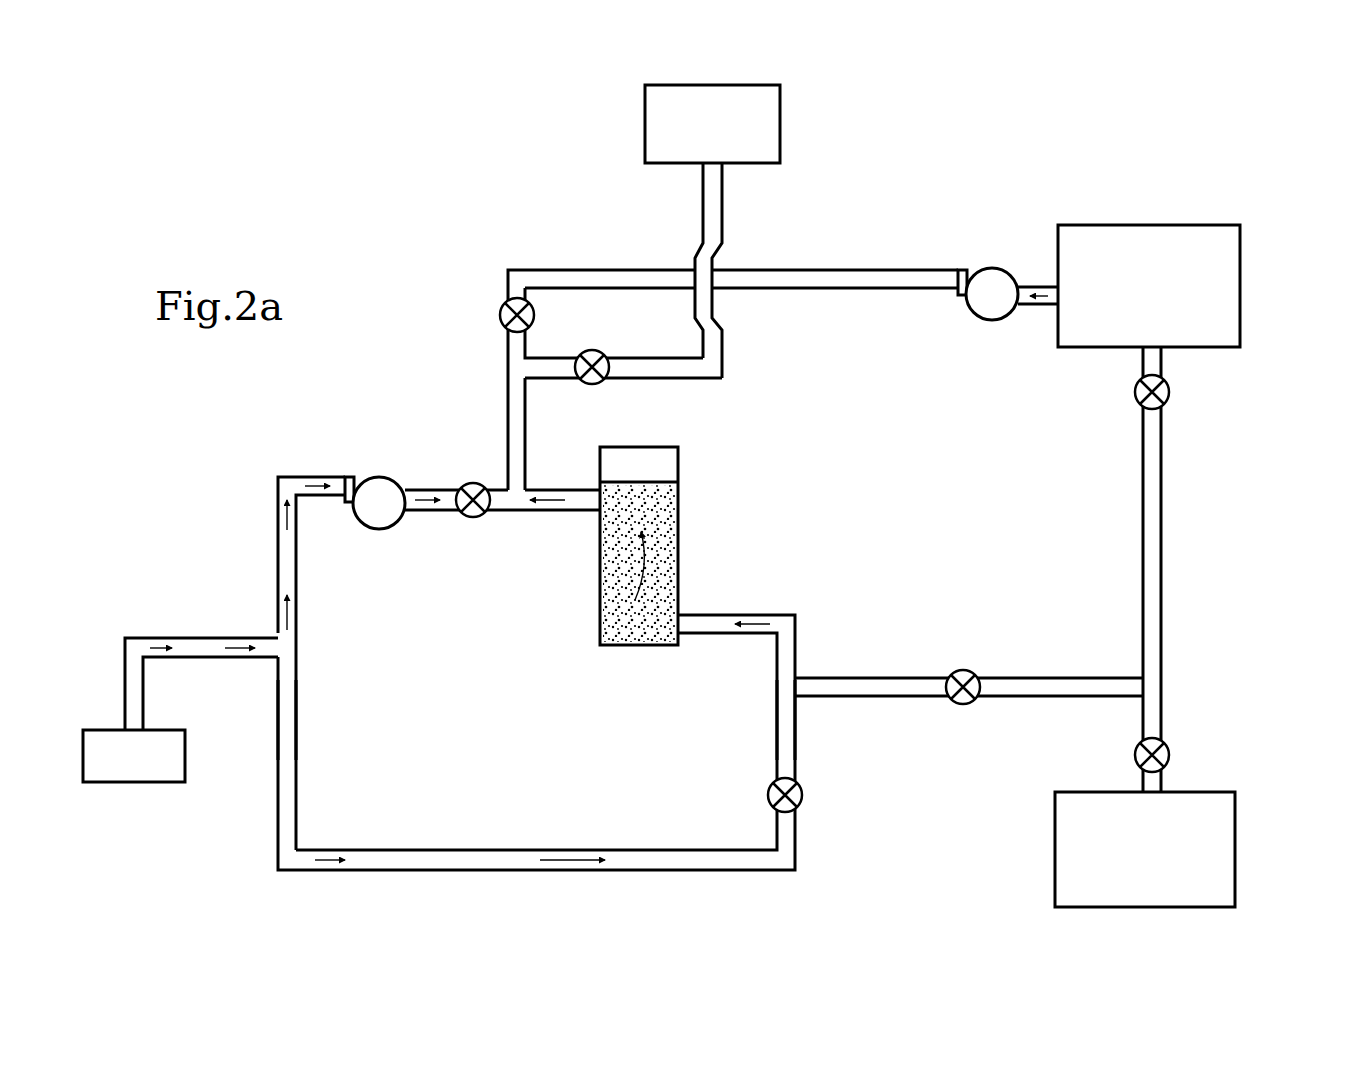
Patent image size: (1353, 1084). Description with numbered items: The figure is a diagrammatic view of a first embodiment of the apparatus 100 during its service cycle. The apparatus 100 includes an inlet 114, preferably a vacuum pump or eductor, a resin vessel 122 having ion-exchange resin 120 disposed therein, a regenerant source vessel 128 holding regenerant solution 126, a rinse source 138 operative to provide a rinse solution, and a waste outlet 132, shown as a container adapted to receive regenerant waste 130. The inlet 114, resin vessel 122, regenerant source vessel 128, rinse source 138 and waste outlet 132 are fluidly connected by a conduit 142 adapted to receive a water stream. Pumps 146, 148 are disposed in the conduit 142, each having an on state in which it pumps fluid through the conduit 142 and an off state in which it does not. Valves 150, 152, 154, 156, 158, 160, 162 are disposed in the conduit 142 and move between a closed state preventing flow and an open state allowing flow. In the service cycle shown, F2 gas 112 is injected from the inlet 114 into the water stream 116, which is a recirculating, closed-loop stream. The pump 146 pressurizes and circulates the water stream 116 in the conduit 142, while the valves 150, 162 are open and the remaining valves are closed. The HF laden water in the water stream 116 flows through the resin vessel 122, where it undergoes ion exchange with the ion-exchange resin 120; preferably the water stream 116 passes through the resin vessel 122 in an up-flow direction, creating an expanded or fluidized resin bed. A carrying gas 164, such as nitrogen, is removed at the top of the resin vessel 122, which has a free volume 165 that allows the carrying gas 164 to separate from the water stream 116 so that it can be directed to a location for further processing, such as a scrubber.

The apparatus 100 is at (988, 160).
The F2 gas 112 is at (220, 642).
The inlet 114 is at (139, 788).
The water stream 116 is at (297, 718).
The ion-exchange resin 120 is at (628, 620).
The resin vessel 122 is at (665, 553).
The regenerant solution 126 is at (1186, 332).
The regenerant source vessel 128 is at (1243, 297).
The regenerant waste 130 is at (1215, 870).
The waste outlet 132 is at (1195, 790).
The rinse source 138 is at (783, 103).
The conduit 142 is at (578, 250).
The pump 146 is at (378, 488).
The pump 148 is at (981, 320).
The valve 150 is at (802, 790).
The valve 152 is at (965, 668).
The valve 154 is at (1166, 745).
The valve 156 is at (1135, 392).
The valve 158 is at (602, 386).
The valve 160 is at (503, 310).
The valve 162 is at (475, 520).
The carrying gas 164 is at (645, 452).
The free volume 165 is at (668, 470).